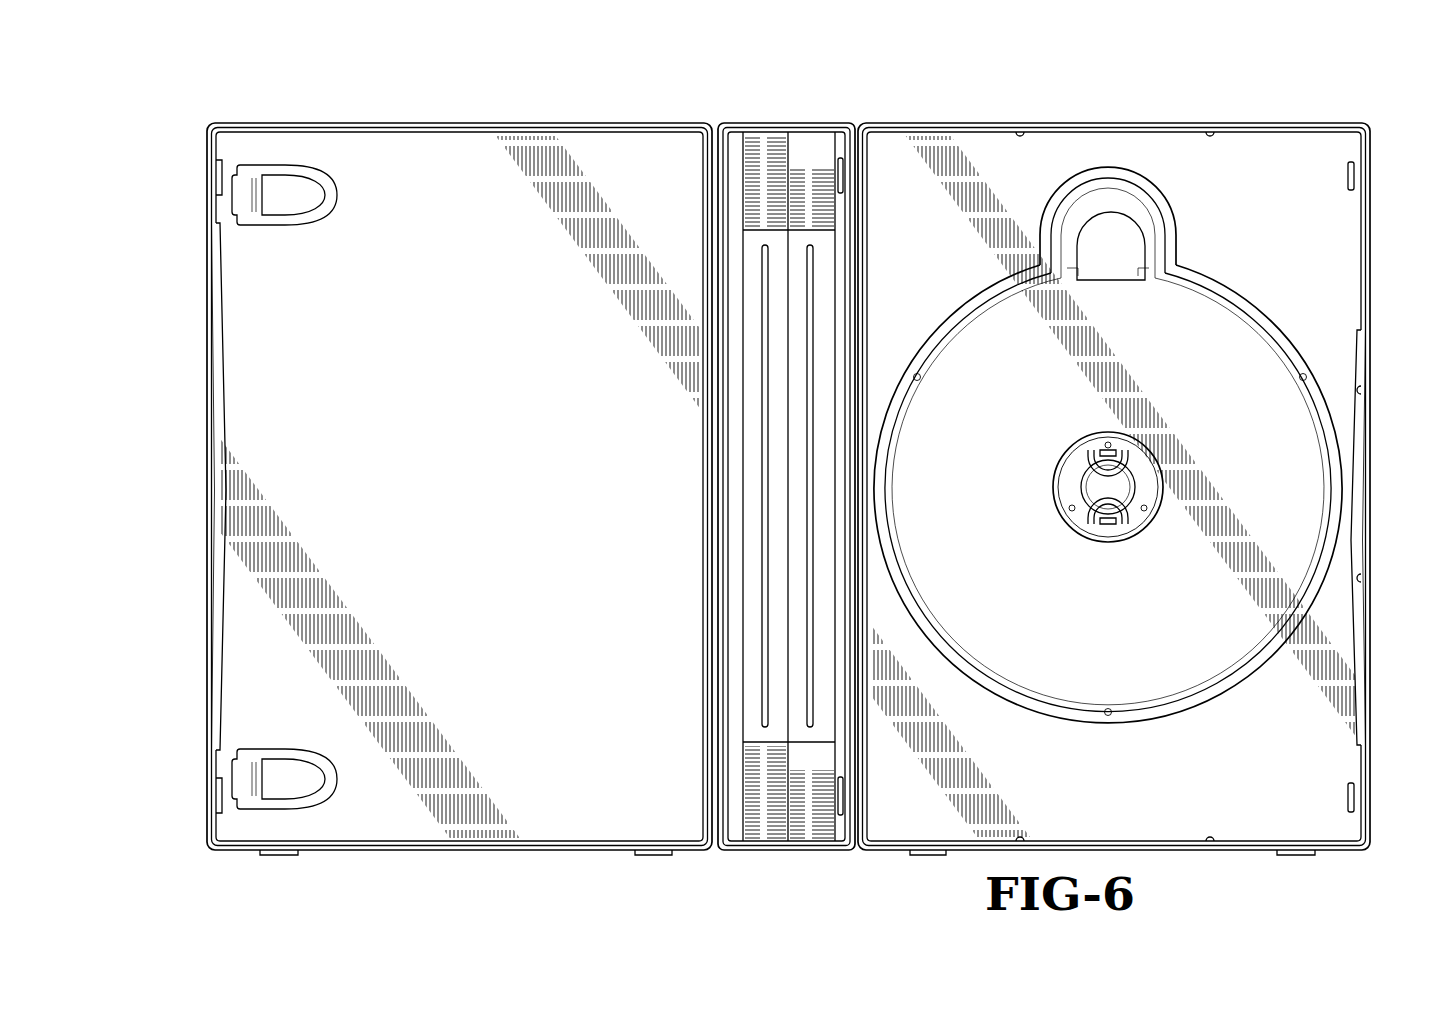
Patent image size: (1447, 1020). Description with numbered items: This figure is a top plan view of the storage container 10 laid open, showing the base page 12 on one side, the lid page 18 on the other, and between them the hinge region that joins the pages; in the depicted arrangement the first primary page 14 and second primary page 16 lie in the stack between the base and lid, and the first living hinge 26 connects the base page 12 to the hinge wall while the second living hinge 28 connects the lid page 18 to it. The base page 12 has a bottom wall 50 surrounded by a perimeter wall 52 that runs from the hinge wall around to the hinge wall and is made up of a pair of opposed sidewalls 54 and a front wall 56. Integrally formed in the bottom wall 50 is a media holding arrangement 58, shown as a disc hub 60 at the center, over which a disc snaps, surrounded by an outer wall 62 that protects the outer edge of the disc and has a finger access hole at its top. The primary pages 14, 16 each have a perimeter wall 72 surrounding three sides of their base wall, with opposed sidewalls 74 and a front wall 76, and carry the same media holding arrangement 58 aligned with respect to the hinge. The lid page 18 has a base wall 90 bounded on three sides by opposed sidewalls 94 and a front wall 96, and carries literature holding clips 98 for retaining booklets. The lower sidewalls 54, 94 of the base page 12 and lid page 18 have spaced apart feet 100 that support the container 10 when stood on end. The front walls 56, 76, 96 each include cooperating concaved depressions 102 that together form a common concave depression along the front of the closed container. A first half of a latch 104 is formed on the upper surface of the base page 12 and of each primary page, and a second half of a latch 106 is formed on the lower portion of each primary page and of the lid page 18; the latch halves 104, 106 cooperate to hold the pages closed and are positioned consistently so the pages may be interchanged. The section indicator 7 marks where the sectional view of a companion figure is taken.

The section line 7- 7 is at (1446, 84).
The storage container 10 is at (498, 870).
The base page 12 is at (1100, 118).
The first primary page 14 is at (828, 263).
The second primary page 16 is at (750, 545).
The lid page 18 is at (240, 118).
The first living hinge 26 is at (862, 295).
The second living hinge 28 is at (718, 450).
The bottom wall 50 is at (1310, 285).
The perimeter wall 52 is at (1194, 862).
The sidewalls 54 is at (1235, 122).
The front wall 56 is at (1365, 213).
The media holding arrangement 58 is at (1227, 703).
The hub 60 is at (1090, 480).
The outer wall 62 is at (1285, 345).
The perimeter wall 72 is at (795, 163).
The sidewalls 74 is at (765, 122).
The front wall 76 is at (757, 210).
The base wall 90 is at (470, 185).
The sidewalls 94 is at (410, 122).
The front wall 96 is at (210, 215).
The literature holding clips 98 is at (290, 185).
The feet 100 is at (282, 858).
The concaved depressions 102 is at (752, 605).
The first half of a latch 104 is at (1355, 175).
The second half of a latch 106 is at (843, 180).